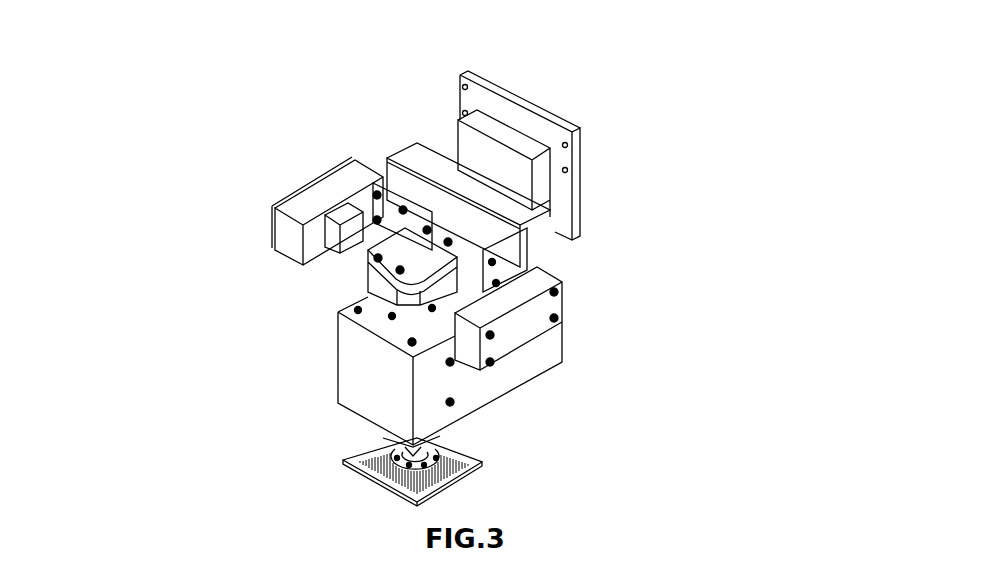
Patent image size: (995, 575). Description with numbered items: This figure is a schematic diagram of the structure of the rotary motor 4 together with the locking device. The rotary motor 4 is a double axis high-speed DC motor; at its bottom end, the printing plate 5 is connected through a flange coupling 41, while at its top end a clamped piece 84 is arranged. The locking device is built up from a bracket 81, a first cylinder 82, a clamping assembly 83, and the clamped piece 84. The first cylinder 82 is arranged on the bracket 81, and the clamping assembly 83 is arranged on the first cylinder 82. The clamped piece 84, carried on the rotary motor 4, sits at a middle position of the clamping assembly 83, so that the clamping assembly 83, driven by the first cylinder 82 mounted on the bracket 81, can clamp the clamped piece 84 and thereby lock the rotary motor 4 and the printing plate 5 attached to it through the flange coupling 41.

The rotary motor 4 is at (564, 335).
The flange coupling 41 is at (285, 334).
The printing plate 5 is at (307, 407).
The bracket 81 is at (621, 120).
The first cylinder 82 is at (581, 200).
The clamping assembly 83 is at (622, 291).
The clamped piece 84 is at (256, 194).